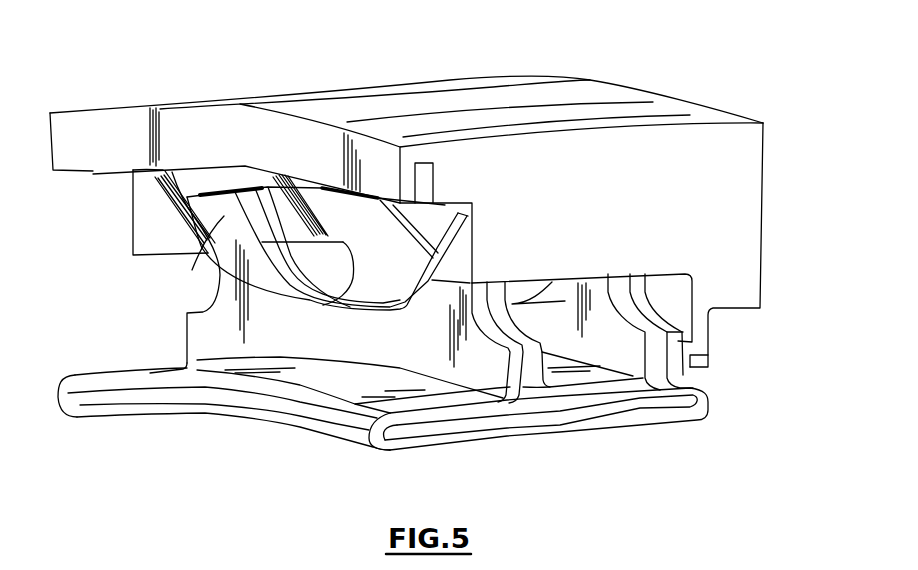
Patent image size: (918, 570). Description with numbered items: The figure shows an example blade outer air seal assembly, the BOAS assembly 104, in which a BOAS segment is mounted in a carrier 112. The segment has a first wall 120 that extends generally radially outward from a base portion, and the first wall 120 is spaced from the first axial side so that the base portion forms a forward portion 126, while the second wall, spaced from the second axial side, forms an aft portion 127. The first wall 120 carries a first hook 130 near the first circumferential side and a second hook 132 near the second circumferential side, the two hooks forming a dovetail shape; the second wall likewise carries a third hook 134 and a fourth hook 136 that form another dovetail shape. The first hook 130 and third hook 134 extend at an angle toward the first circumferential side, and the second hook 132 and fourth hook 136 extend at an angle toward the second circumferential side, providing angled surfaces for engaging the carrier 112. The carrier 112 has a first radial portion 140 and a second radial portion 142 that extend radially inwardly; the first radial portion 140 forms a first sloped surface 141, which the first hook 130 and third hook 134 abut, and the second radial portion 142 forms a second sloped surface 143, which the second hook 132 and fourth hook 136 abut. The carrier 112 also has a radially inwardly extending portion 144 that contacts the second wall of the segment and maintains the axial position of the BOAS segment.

The BOAS assembly 104 is at (702, 66).
The carrier 112 is at (738, 175).
The first wall 120 is at (318, 298).
The forward portion 126 is at (334, 388).
The aft portion 127 is at (705, 397).
The first hook 130 is at (190, 290).
The second hook 132 is at (473, 305).
The third hook 134 is at (334, 188).
The fourth hook 136 is at (625, 305).
The first radial portion 140 is at (149, 236).
The first sloped surface 141 is at (180, 237).
The second radial portion 142 is at (620, 245).
The second sloped surface 143 is at (468, 250).
The radially inwardly extending portion 144 is at (692, 355).